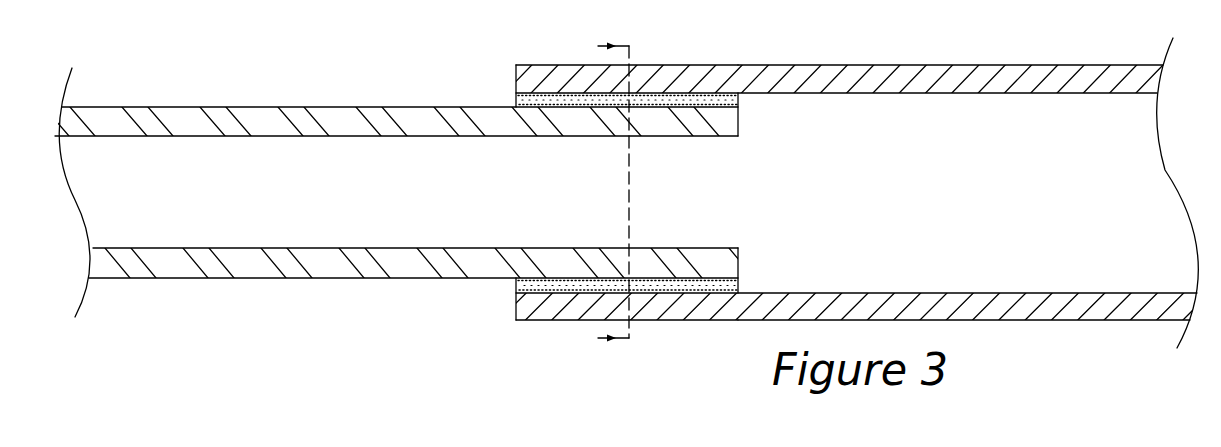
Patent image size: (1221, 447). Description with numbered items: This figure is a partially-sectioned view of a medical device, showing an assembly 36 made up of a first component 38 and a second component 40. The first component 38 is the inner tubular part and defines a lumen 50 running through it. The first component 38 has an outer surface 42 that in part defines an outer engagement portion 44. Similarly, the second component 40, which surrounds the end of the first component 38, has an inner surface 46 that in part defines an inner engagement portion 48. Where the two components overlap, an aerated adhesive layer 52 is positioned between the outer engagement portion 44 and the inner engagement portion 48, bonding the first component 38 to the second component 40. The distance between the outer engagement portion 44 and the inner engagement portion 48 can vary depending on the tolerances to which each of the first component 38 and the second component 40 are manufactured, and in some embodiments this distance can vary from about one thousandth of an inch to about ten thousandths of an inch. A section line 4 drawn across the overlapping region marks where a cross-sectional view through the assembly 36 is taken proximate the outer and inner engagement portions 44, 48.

The assembly 36 is at (441, 37).
The first component 38 is at (258, 112).
The second component 40 is at (988, 70).
The outer surface 42 is at (405, 107).
The outer engagement portion 44 is at (582, 275).
The inner surface 46 is at (873, 97).
The inner engagement portion 48 is at (694, 92).
The lumen 50 is at (240, 227).
The aerated adhesive layer 52 is at (530, 99).
The section line 4- 4 is at (605, 193).